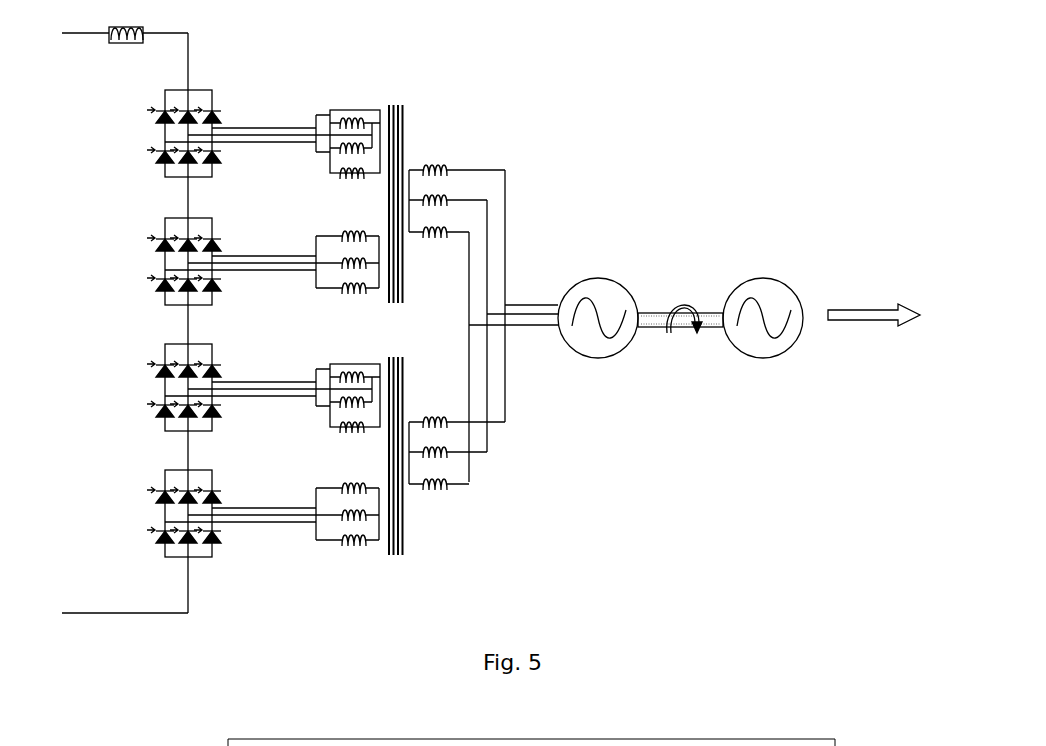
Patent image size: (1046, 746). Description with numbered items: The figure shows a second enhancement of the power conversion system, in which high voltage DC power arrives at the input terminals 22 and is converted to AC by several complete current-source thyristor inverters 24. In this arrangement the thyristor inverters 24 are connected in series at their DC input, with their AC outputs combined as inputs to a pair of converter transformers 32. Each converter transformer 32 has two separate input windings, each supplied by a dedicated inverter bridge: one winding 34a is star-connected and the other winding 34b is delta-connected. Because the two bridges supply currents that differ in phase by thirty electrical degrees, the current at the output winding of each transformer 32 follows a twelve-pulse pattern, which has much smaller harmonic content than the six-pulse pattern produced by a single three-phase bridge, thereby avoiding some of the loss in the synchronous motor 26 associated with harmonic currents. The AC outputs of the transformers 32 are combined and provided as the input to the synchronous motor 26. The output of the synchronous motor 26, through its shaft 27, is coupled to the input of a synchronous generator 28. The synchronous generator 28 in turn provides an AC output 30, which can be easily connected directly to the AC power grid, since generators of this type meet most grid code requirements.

The input terminals 22 is at (105, 642).
The current-source thyristor inverter 24 is at (268, 92).
The synchronous motor 26 is at (588, 362).
The shaft 27 is at (665, 318).
The synchronous generator 28 is at (762, 362).
The AC output 30 is at (900, 275).
The converter transformer 32 is at (483, 103).
The star-connected input winding 34a is at (307, 223).
The delta-connected input winding 34b is at (373, 103).